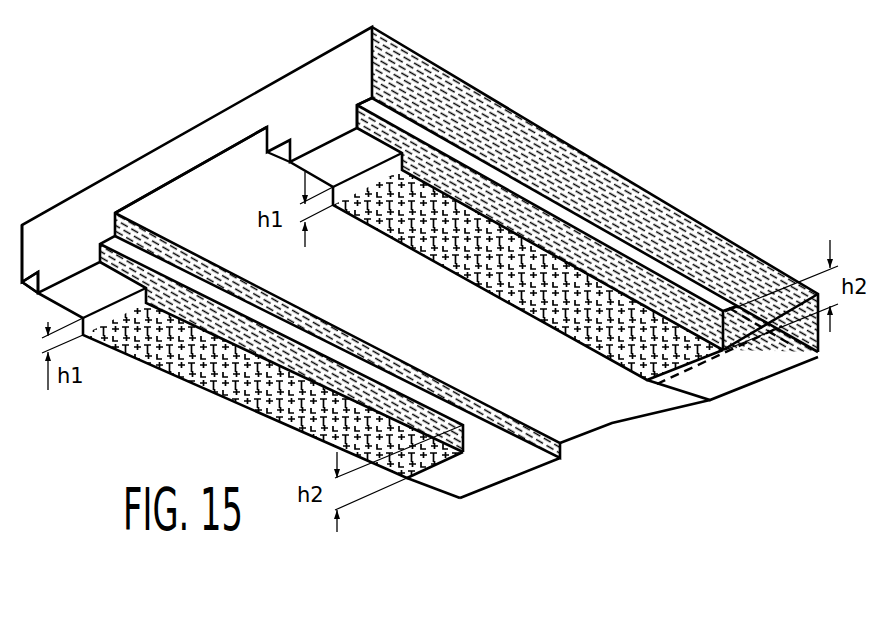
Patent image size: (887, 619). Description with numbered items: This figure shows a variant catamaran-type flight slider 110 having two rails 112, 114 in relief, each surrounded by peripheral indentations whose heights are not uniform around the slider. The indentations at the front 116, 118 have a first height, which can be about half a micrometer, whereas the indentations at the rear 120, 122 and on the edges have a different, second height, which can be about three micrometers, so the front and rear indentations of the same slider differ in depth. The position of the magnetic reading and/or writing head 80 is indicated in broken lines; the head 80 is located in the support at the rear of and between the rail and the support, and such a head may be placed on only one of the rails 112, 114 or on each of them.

The magnetic reading and/or writing head 80 is at (760, 356).
The catamaran-type flight slider 110 is at (620, 165).
The rail 112 is at (662, 364).
The rail 114 is at (413, 455).
The front indentation 116 is at (97, 284).
The front indentation 118 is at (362, 154).
The rear indentation 120 is at (512, 460).
The rear indentation 122 is at (758, 366).